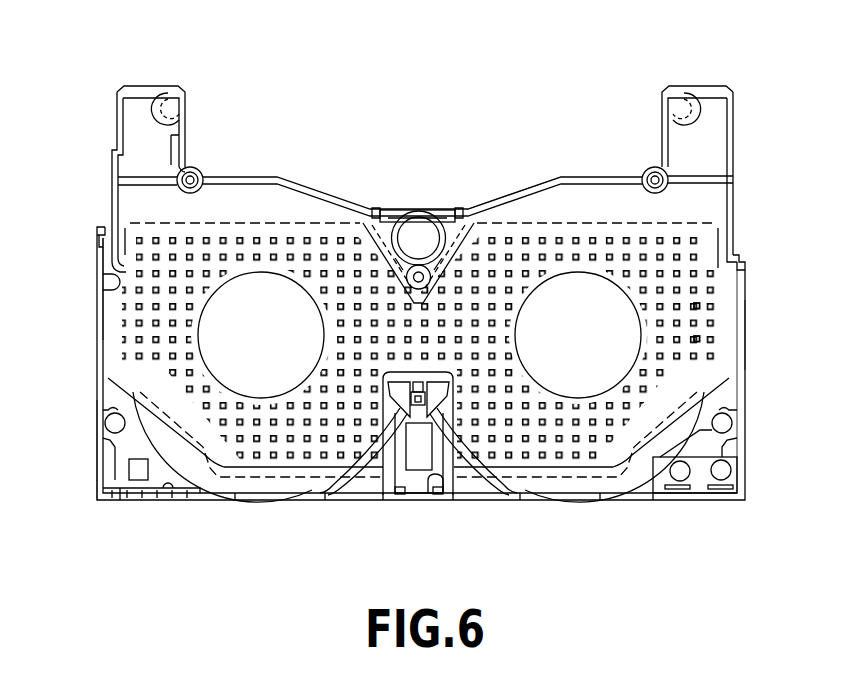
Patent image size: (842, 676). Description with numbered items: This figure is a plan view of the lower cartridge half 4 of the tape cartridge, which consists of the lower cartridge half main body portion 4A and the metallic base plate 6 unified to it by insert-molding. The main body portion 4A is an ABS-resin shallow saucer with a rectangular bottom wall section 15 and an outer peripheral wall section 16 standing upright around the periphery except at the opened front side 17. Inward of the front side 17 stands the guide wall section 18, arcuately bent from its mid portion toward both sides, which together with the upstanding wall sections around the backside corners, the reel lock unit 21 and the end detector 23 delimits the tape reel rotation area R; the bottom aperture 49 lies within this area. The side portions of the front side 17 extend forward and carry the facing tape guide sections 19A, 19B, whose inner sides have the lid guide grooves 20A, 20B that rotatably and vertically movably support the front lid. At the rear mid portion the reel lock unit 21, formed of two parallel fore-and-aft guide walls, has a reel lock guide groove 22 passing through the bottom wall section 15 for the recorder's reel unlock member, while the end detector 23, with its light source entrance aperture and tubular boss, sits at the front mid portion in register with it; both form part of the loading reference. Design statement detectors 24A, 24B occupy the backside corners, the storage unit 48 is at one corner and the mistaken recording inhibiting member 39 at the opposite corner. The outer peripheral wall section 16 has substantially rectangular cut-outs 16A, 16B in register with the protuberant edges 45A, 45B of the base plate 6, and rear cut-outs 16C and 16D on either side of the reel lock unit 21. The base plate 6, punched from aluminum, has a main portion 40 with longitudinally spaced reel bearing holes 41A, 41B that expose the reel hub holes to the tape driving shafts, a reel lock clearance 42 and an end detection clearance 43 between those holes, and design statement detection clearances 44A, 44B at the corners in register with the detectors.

The lower cartridge half 4 is at (732, 73).
The lower cartridge half main body portion 4A is at (95, 453).
The base plate 6 is at (130, 335).
The tape reel rotation area R is at (230, 246).
The bottom wall section 15 is at (130, 200).
The outer peripheral wall section 16 is at (735, 212).
The cut-out 16A is at (100, 328).
The cut-out 16B is at (740, 335).
The cut-out 16C is at (303, 503).
The cut-out 16D is at (612, 500).
The front side 17 is at (376, 136).
The guide wall section 18 is at (305, 178).
The tape guide section 19A is at (158, 110).
The tape guide section 19B is at (688, 110).
The lid guide groove 20A is at (187, 150).
The lid guide groove 20B is at (662, 148).
The reel lock unit 21 is at (434, 484).
The reel lock guide groove 22 is at (417, 465).
The end detector 23 is at (415, 228).
The design statement detector 24A is at (118, 465).
The design statement detector 24B is at (706, 490).
The mistaken recording inhibiting member 39 is at (678, 487).
The main portion 40 is at (690, 343).
The reel bearing hole 41A is at (268, 395).
The reel bearing hole 41B is at (580, 392).
The reel lock clearance 42 is at (389, 404).
The end detection clearance 43 is at (460, 257).
The design statement detection clearance 44A is at (133, 403).
The design statement detection clearance 44B is at (685, 405).
The protuberant edge 45A is at (115, 293).
The protuberant edge 45B is at (745, 268).
The storage unit 48 is at (170, 488).
The bottom aperture 49 is at (690, 305).